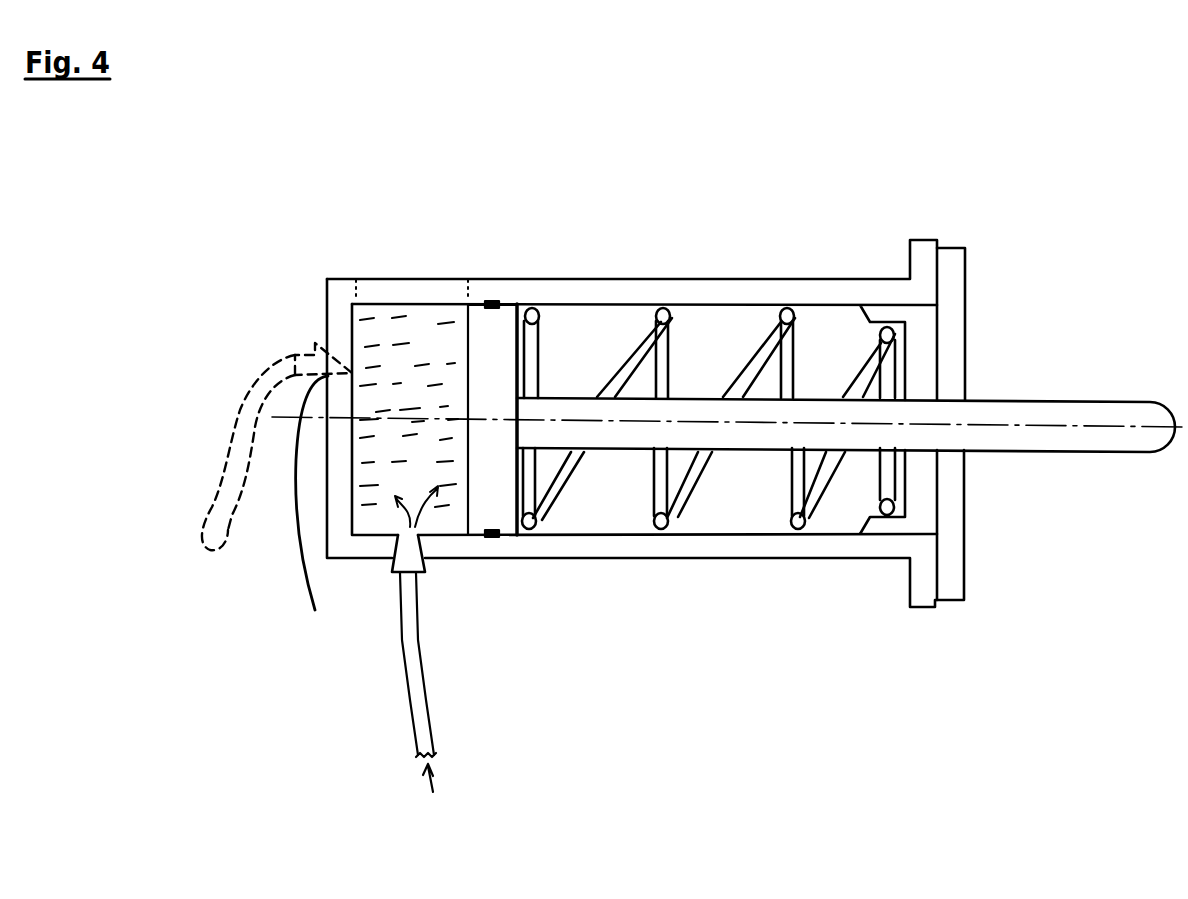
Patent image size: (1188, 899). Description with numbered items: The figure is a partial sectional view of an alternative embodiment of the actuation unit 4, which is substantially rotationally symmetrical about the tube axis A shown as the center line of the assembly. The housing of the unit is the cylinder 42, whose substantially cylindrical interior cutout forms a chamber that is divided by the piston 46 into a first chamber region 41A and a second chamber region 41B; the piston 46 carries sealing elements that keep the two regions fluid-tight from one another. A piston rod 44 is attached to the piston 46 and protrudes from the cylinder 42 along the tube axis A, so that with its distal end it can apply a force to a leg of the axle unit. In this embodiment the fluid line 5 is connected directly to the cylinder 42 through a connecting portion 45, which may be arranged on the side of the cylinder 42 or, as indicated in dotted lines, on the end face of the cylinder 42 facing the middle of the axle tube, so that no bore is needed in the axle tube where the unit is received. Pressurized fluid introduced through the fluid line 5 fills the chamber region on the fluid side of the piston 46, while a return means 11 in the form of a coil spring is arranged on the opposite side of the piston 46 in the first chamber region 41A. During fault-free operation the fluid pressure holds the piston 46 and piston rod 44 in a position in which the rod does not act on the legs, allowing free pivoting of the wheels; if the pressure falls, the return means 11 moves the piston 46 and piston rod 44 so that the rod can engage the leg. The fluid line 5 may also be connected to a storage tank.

The actuation unit 4 is at (778, 98).
The fluid line 5 is at (234, 481).
The return means 11 is at (818, 478).
The first chamber region 41A is at (468, 276).
The second chamber region 41B is at (517, 562).
The cylinder 42 is at (790, 292).
The piston rod 44 is at (1100, 410).
The connecting portion 45 is at (308, 670).
The piston 46 is at (492, 358).
The tube axis A is at (578, 420).